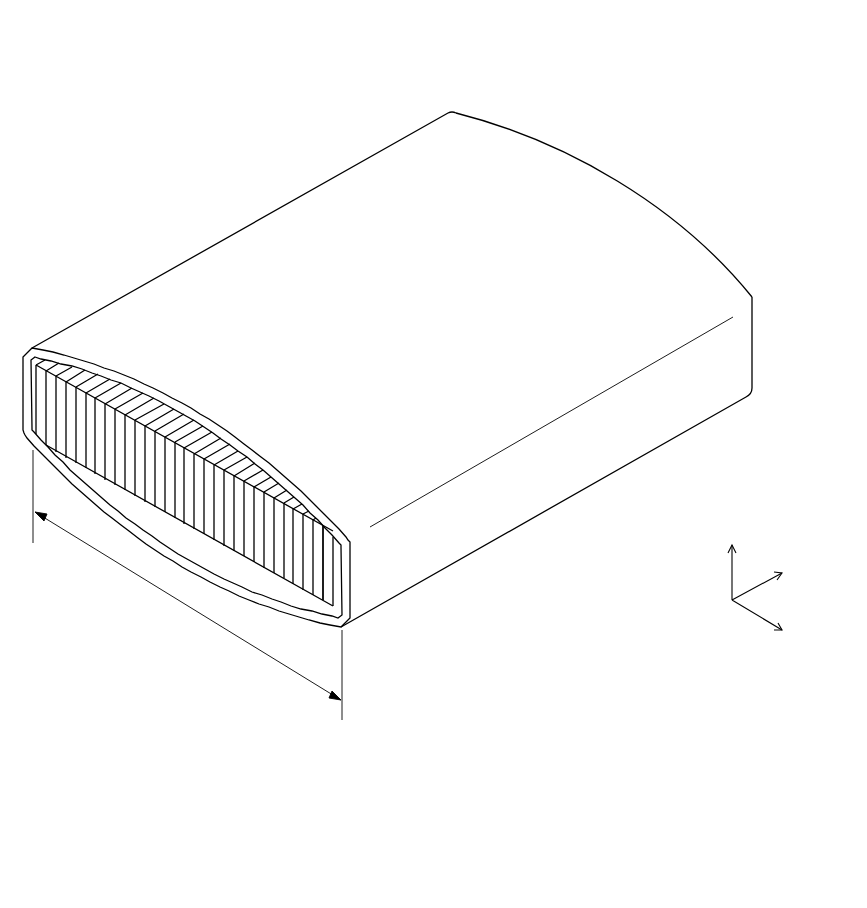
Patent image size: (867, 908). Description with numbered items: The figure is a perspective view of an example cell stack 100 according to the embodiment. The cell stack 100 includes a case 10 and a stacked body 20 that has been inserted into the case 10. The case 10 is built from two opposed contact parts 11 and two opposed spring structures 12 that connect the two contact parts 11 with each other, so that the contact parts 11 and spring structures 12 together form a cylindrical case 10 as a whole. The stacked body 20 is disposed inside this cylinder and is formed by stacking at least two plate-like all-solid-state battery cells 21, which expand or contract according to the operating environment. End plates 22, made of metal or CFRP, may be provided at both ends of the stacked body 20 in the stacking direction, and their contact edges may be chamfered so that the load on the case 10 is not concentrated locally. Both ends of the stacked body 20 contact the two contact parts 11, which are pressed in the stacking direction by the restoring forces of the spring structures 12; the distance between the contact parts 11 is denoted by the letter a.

The cell stack 100 is at (93, 92).
The case 10 is at (272, 275).
The contact part 11 is at (540, 485).
The spring structure 12 is at (600, 203).
The stacked body 20 is at (68, 355).
The all-solid-state battery cell 21 is at (110, 373).
The end plate 22 is at (338, 578).